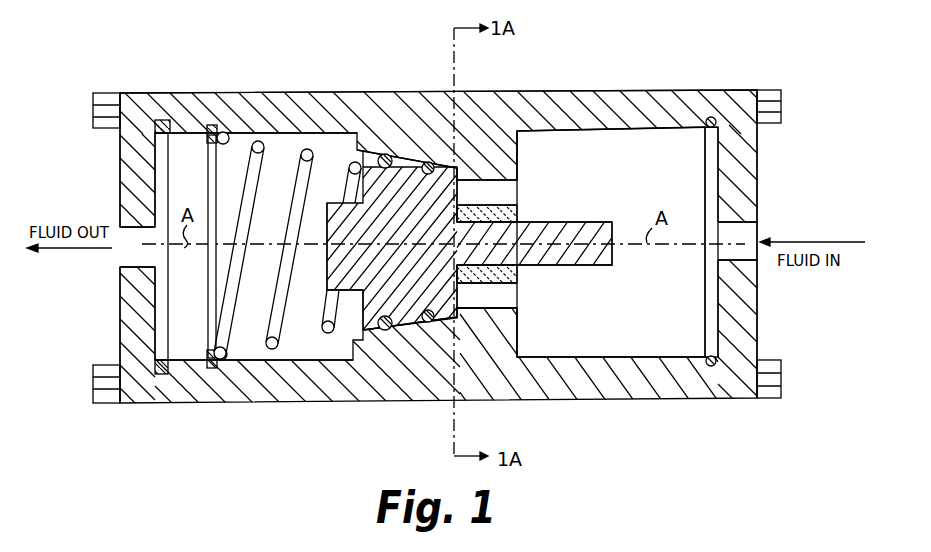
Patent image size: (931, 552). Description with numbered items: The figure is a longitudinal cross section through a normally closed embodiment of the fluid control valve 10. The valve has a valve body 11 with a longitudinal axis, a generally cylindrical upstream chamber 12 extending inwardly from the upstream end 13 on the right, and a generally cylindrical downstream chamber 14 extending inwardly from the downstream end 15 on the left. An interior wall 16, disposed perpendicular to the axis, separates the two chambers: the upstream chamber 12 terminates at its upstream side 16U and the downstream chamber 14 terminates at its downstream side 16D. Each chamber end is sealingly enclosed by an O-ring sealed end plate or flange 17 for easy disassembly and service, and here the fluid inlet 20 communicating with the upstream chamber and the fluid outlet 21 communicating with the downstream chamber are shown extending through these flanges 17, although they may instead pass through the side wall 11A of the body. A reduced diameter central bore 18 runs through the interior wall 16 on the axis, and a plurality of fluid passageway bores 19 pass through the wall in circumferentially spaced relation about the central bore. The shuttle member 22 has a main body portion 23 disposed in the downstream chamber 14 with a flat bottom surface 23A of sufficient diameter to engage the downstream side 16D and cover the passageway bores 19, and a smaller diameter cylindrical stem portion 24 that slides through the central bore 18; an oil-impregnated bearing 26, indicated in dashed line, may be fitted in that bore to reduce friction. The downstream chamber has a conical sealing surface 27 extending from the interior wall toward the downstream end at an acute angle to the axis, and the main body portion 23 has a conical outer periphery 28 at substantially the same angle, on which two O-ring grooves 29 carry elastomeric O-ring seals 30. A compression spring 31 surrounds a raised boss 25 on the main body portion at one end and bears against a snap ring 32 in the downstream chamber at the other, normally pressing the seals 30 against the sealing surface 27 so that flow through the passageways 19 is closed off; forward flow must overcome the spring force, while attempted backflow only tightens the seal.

The fluid control valve 10 is at (612, 62).
The valve body 11 is at (547, 91).
The side wall 11A is at (657, 104).
The upstream chamber 12 is at (656, 172).
The upstream end 13 is at (775, 188).
The downstream chamber 14 is at (197, 306).
The downstream end 15 is at (90, 193).
The interior wall 16 is at (517, 166).
The upstream side 16U is at (505, 330).
The downstream side 16D is at (487, 340).
The end plate or flange 17 is at (128, 346).
The central bore 18 is at (535, 224).
The fluid passageway bores 19 is at (504, 190).
The fluid inlet 20 is at (758, 224).
The fluid outlet 21 is at (126, 253).
The shuttle member 22 is at (352, 305).
The main body portion 23 is at (424, 255).
The flat bottom surface 23A is at (478, 177).
The stem portion 24 is at (572, 252).
The raised boss 25 is at (319, 283).
The oil-impregnated bearing 26 is at (520, 343).
The conical sealing surface 27 is at (407, 155).
The conical outer periphery 28 is at (408, 340).
The O-ring groove 29 is at (382, 333).
The O-ring seals 30 is at (430, 322).
The compression spring 31 is at (256, 141).
The snap ring 32 is at (202, 134).